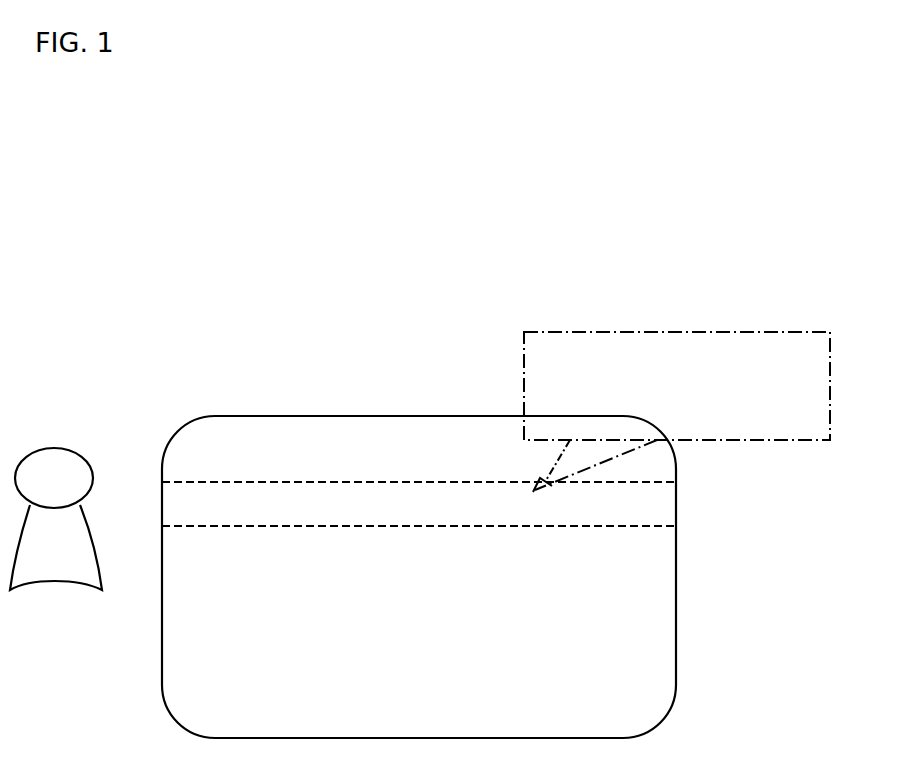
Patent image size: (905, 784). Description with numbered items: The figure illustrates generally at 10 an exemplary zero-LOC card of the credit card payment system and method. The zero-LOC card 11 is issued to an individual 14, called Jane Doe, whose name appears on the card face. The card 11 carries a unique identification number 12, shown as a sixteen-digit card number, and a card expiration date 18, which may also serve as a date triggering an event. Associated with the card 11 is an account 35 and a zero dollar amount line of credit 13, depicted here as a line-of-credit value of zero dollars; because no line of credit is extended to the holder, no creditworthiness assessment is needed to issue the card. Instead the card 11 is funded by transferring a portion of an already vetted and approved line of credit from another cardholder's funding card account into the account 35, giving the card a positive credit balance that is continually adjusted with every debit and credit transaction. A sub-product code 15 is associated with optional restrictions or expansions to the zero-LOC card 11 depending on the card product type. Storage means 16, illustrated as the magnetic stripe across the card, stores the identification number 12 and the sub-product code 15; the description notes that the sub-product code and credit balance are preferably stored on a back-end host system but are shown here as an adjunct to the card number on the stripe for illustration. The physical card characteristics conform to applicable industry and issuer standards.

The zero-LOC card 10 is at (172, 148).
The zero-LOC card 11 is at (548, 611).
The unique identification number 12 is at (205, 662).
The zero dollar amount line of credit 13 is at (735, 332).
The individual 14 is at (203, 565).
The sub-product code 15 is at (576, 401).
The storage means 16 is at (608, 515).
The card expiration date 18 is at (205, 706).
The account 35 is at (555, 332).